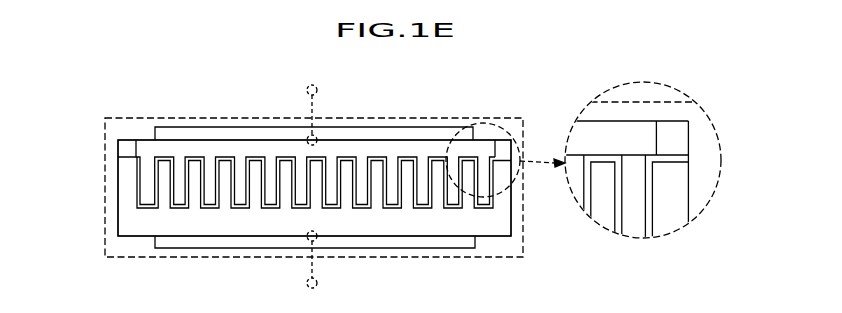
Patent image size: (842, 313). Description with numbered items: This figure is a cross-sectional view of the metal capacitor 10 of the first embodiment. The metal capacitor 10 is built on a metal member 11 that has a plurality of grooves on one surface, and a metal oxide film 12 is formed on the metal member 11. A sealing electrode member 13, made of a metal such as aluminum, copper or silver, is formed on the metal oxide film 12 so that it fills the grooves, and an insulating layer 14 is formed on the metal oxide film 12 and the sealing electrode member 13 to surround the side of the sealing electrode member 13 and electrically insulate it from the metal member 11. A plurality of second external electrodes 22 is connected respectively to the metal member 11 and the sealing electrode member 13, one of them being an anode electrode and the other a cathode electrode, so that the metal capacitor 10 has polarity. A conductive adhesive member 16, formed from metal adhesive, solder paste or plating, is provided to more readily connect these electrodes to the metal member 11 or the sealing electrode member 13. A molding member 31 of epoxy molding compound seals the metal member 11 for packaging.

The metal capacitor 10 is at (265, 118).
The metal member 11 is at (138, 224).
The metal oxide film 12 is at (238, 210).
The sealing electrode member 13 is at (208, 150).
The insulating layer 14 is at (125, 148).
The conductive adhesive member 16 is at (432, 132).
The second external electrodes 22 is at (317, 88).
The molding member 31 is at (460, 258).